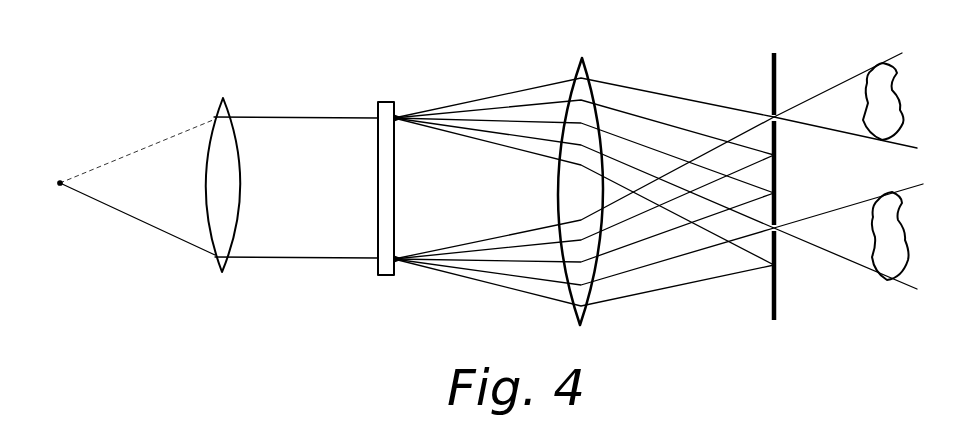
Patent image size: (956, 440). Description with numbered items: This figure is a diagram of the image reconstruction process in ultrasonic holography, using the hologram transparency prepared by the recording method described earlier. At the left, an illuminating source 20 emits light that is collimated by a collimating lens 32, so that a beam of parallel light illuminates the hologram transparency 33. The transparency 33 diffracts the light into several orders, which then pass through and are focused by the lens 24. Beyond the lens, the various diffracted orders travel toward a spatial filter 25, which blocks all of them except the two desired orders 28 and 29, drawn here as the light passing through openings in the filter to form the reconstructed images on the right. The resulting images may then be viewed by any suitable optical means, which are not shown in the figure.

The illuminating source 20 is at (61, 187).
The collimating lens 32 is at (226, 108).
The hologram transparency 33 is at (392, 102).
The lens 24 is at (578, 315).
The spatial filter 25 is at (771, 73).
The desired order 28 is at (833, 88).
The desired order 29 is at (843, 257).